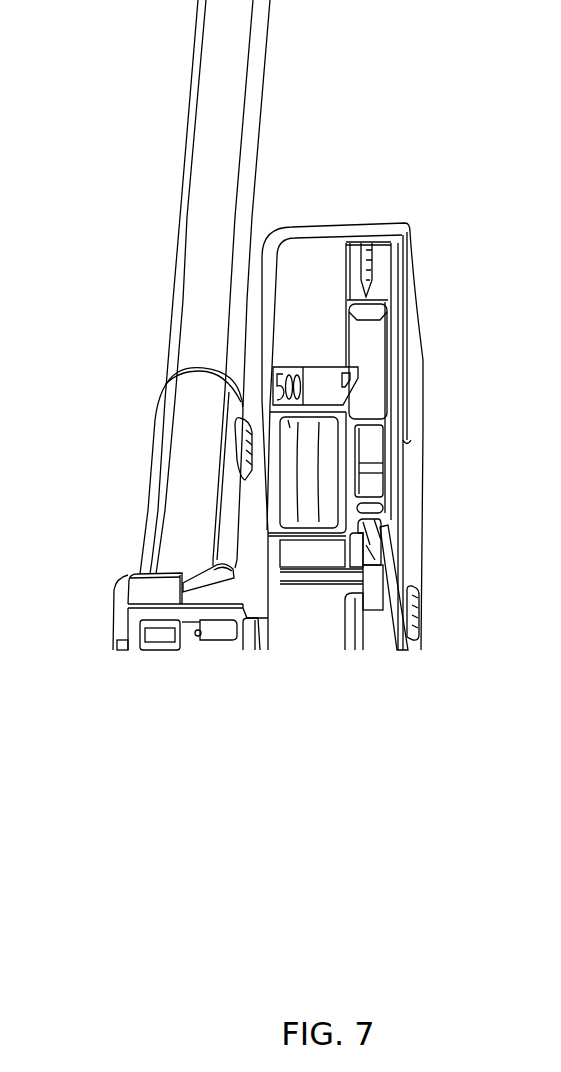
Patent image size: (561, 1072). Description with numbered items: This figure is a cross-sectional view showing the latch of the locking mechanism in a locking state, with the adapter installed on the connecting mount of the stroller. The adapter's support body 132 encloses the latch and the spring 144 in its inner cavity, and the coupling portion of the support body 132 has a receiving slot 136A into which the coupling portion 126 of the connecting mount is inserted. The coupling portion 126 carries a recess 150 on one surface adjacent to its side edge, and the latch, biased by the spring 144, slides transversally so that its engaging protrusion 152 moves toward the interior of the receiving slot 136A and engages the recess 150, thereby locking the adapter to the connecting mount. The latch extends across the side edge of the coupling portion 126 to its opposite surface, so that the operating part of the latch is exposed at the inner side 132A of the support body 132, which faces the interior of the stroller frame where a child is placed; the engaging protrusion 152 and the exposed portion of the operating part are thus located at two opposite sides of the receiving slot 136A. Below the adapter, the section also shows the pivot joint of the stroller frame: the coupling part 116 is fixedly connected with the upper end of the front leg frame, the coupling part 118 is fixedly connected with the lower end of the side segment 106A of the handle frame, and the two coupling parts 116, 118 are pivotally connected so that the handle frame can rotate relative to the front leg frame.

The side segment 106A is at (195, 123).
The spring 144 is at (277, 364).
The engaging protrusion 152 is at (327, 377).
The support body 132 is at (357, 225).
The coupling portion 126 is at (372, 325).
The recess 150 is at (360, 373).
The receiving slot 136A is at (373, 452).
The inner side 132A is at (433, 553).
The coupling part 118 is at (208, 590).
The coupling part 116 is at (127, 596).